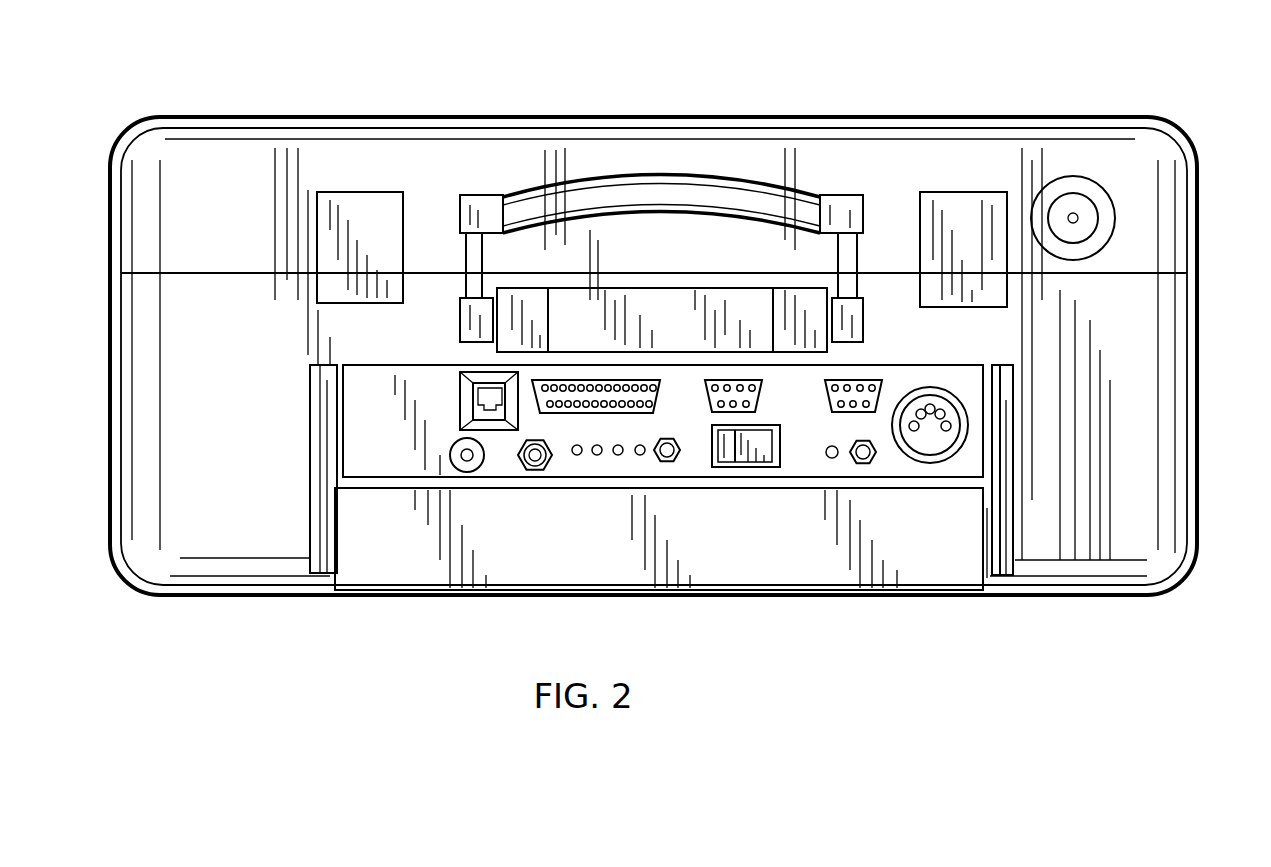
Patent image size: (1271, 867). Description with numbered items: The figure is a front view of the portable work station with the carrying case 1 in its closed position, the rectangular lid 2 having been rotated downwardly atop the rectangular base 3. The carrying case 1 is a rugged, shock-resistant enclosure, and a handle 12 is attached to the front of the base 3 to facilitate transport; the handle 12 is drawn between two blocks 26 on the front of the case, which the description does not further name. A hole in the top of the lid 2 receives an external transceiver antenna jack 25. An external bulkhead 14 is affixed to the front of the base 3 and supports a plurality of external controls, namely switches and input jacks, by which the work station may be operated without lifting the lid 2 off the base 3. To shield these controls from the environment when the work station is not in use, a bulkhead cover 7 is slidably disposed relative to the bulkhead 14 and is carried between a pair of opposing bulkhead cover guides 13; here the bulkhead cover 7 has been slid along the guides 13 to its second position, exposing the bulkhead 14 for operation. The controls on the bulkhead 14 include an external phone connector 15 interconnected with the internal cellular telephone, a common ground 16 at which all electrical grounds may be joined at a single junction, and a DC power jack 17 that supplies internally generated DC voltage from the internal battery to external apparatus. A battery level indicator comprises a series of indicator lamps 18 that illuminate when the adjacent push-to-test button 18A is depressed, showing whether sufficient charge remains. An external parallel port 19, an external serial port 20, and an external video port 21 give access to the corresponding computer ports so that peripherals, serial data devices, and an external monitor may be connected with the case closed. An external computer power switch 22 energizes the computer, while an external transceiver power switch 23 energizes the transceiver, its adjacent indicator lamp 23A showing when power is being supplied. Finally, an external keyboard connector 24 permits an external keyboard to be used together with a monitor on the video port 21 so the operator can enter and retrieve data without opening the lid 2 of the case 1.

The carrying case 1 is at (1000, 95).
The lid 2 is at (1158, 118).
The base 3 is at (1153, 598).
The bulkhead cover 7 is at (920, 598).
The handle 12 is at (862, 193).
The bulkhead cover guides 13 is at (305, 570).
The external bulkhead 14 is at (360, 430).
The external phone connector 15 is at (462, 407).
The common ground 16 is at (467, 472).
The DC power jack 17 is at (535, 472).
The indicator lamps 18 is at (640, 456).
The push-to-test button 18A is at (667, 463).
The external parallel port 19 is at (610, 385).
The external serial port 20 is at (740, 385).
The external video port 21 is at (880, 375).
The external computer power switch 22 is at (733, 472).
The external transceiver power switch 23 is at (865, 472).
The indicator lamp 23A is at (830, 470).
The external keyboard connector 24 is at (935, 465).
The external transceiver antenna jack 25 is at (1098, 212).
The support pad 26 is at (375, 192).